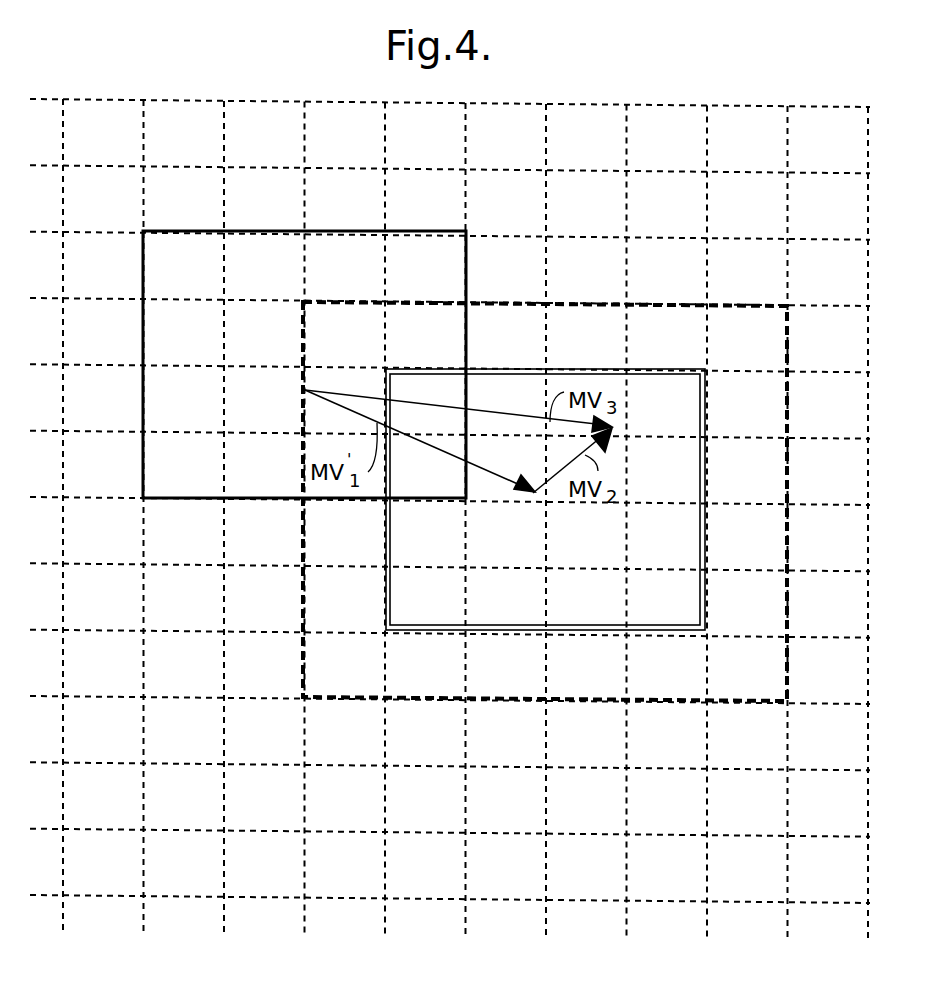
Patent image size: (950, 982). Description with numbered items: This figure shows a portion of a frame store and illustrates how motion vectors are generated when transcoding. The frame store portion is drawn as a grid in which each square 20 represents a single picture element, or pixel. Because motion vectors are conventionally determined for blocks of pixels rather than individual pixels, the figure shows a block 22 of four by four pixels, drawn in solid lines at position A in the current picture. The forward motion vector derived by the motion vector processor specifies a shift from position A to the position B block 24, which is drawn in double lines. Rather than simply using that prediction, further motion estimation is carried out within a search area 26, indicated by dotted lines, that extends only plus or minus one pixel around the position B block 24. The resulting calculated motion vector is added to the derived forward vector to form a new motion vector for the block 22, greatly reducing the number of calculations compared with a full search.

The square 20 is at (106, 872).
The block 22 is at (313, 230).
The block B in current frame 24 is at (477, 630).
The search area 26 is at (637, 303).